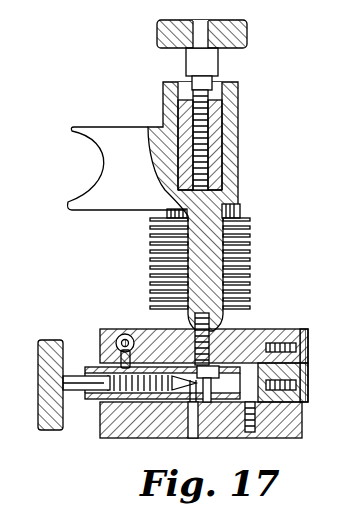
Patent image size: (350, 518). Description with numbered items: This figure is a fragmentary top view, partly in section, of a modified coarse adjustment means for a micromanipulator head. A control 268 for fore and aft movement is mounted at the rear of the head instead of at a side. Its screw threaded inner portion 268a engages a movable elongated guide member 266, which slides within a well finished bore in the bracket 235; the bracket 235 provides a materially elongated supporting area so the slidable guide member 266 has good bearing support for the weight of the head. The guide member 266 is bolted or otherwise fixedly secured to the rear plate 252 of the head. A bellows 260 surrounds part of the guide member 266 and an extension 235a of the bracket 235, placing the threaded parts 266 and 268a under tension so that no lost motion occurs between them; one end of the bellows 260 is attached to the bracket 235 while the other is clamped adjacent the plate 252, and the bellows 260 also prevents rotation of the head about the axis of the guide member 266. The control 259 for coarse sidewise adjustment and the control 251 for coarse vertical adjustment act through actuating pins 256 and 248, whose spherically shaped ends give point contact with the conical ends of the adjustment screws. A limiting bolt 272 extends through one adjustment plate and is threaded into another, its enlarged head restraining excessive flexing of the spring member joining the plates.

The bracket 235 is at (232, 177).
The extension of the bracket 235a is at (243, 267).
The actuating pin 248 is at (160, 440).
The control for coarse vertical adjustment 251 is at (50, 336).
The rear plate 252 is at (257, 328).
The actuating pin 256 is at (120, 354).
The control for coarse sidewise adjustment 259 is at (126, 340).
The bellows 260 is at (237, 214).
The guide member 266 is at (213, 160).
The control 268 is at (248, 38).
The screw threaded inner portion 268a is at (228, 128).
The limiting bolt 272 is at (270, 328).